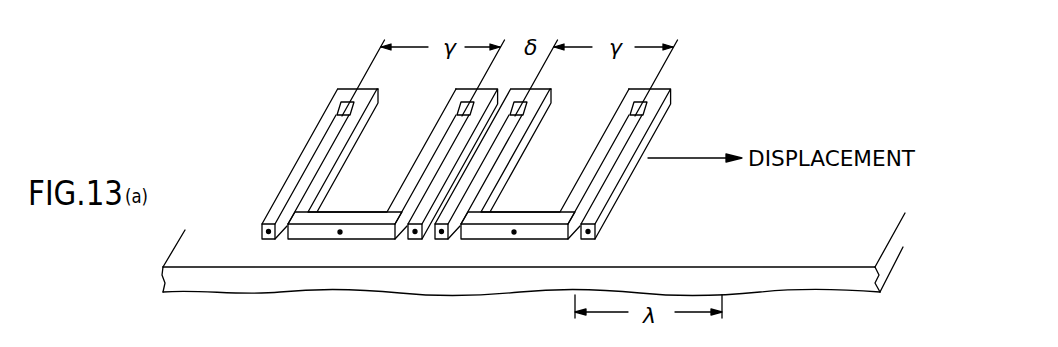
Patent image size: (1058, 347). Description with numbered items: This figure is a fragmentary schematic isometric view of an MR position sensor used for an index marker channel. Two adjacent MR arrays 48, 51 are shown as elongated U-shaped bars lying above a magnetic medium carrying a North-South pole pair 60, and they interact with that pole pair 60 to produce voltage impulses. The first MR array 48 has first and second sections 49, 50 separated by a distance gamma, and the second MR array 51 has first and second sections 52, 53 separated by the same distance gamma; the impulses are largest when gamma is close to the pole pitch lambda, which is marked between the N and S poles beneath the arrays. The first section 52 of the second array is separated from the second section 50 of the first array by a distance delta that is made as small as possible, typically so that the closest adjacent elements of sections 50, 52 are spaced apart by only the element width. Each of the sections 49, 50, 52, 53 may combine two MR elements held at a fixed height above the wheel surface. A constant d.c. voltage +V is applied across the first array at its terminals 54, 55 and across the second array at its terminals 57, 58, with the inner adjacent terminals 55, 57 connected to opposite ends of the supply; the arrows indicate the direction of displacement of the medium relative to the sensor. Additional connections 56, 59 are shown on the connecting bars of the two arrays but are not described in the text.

The first MR array 48 is at (423, 154).
The first section of first MR array 49 is at (298, 200).
The second section of first MR array 50 is at (417, 195).
The second MR array 51 is at (591, 154).
The first section of second MR array 52 is at (471, 198).
The second section of second MR array 53 is at (593, 197).
The terminal 54 is at (268, 239).
The terminal 55 is at (415, 239).
The output terminal of first element 56 is at (340, 234).
The terminal 57 is at (453, 303).
The terminal 58 is at (588, 239).
The output terminal of second element 59 is at (514, 234).
The North-South pole pair 60 is at (587, 283).